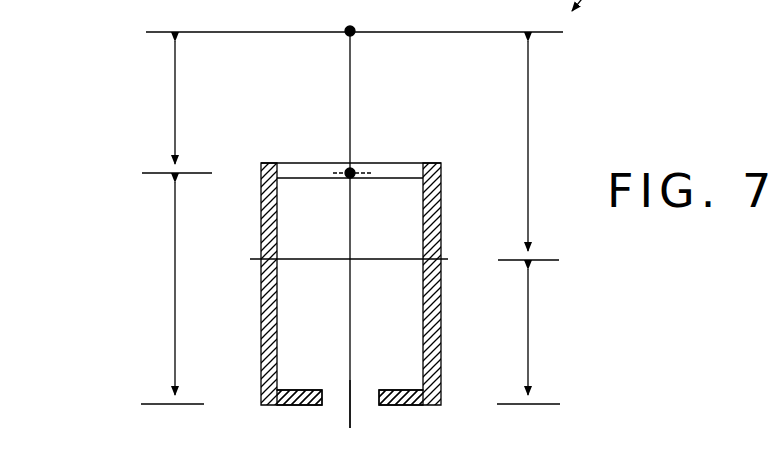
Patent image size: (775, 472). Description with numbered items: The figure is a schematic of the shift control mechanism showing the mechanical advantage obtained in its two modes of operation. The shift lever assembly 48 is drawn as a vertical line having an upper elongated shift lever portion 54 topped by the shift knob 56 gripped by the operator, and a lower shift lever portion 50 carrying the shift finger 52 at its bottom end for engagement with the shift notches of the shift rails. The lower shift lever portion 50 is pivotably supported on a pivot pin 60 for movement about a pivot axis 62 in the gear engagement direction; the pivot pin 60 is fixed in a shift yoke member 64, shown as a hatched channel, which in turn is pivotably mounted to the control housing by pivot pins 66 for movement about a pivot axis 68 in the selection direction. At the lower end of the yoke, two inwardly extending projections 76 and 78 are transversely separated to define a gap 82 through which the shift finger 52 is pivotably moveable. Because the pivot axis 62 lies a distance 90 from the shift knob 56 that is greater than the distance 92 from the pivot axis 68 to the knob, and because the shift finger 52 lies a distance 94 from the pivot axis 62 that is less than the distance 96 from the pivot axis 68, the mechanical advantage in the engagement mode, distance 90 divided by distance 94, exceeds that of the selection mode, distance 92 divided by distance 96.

The shift lever assembly 48 is at (284, 117).
The lower shift lever portion 50 is at (352, 199).
The shift finger 52 is at (350, 413).
The upper elongated shift lever portion 54 is at (352, 113).
The shift knob 56 is at (355, 36).
The pivot pin 60 is at (372, 259).
The pivot axis 62 is at (500, 258).
The shift yoke member 64 is at (262, 338).
The pivot pins 66 is at (348, 172).
The pivot axis 68 is at (200, 172).
The inwardly extending projection 76 is at (411, 405).
The inwardly extending projection 78 is at (308, 405).
The gap 82 is at (366, 394).
The distance 90 is at (528, 145).
The distance 92 is at (175, 112).
The distance 94 is at (528, 348).
The distance 96 is at (175, 272).